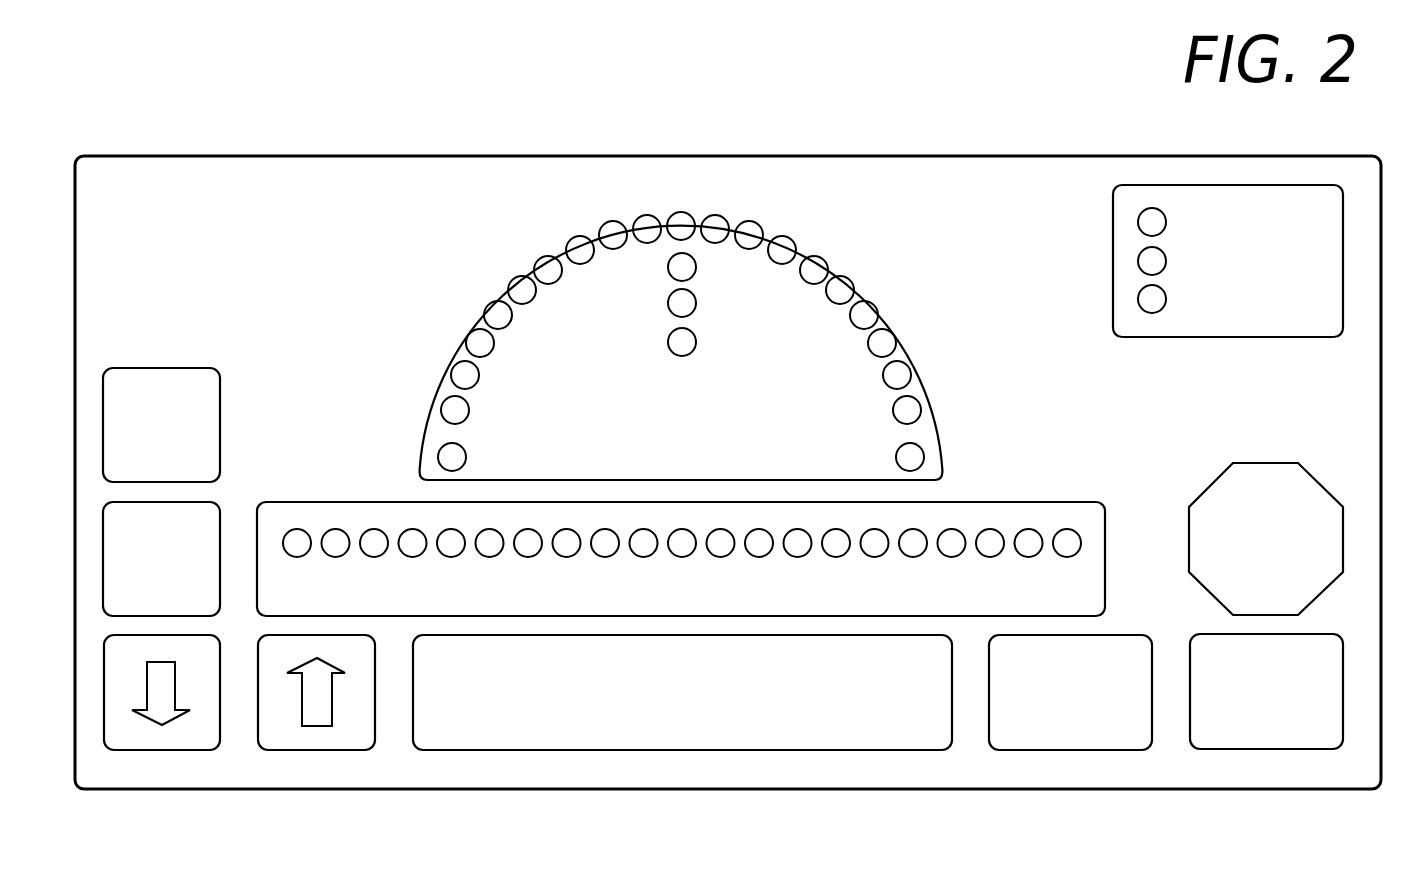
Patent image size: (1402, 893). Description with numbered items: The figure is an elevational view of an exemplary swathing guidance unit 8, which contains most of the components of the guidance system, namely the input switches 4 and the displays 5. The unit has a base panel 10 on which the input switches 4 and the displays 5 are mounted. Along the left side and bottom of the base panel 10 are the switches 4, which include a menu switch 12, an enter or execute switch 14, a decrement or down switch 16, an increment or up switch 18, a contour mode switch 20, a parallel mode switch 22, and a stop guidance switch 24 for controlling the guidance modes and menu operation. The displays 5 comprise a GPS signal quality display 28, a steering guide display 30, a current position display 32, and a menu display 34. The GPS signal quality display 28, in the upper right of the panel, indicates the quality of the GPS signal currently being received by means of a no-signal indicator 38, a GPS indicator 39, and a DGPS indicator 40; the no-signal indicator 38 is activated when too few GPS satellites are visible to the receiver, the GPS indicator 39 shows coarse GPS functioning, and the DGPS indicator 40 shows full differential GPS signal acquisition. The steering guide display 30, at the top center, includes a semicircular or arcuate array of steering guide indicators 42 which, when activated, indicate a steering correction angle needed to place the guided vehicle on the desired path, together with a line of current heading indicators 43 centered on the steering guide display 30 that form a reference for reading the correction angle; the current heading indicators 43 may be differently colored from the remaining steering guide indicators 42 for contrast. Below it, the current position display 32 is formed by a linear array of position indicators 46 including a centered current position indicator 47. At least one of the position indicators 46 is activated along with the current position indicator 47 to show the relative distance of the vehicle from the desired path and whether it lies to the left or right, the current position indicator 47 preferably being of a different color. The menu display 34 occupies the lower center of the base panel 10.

The input switches 4 is at (723, 568).
The displays 5 is at (800, 470).
The swathing guidance unit 8 is at (728, 441).
The base panel 10 is at (863, 166).
The menu switch 12 is at (200, 377).
The enter or execute switch 14 is at (208, 512).
The decrement or down switch 16 is at (182, 740).
The increment or up switch 18 is at (345, 740).
The contour mode switch 20 is at (1095, 738).
The parallel mode switch 22 is at (1286, 740).
The stop guidance switch 24 is at (1257, 470).
The GPS signal quality display 28 is at (1195, 223).
The steering guide display 30 is at (681, 295).
The current position display 32 is at (681, 526).
The menu display 34 is at (749, 738).
The no-signal indicator 38 is at (1140, 217).
The GPS indicator 39 is at (1140, 268).
The DGPS indicator 40 is at (1140, 305).
The steering guide indicators 42 is at (574, 250).
The current heading indicators 43 is at (680, 228).
The position indicators 46 is at (373, 540).
The current position indicator 47 is at (680, 537).